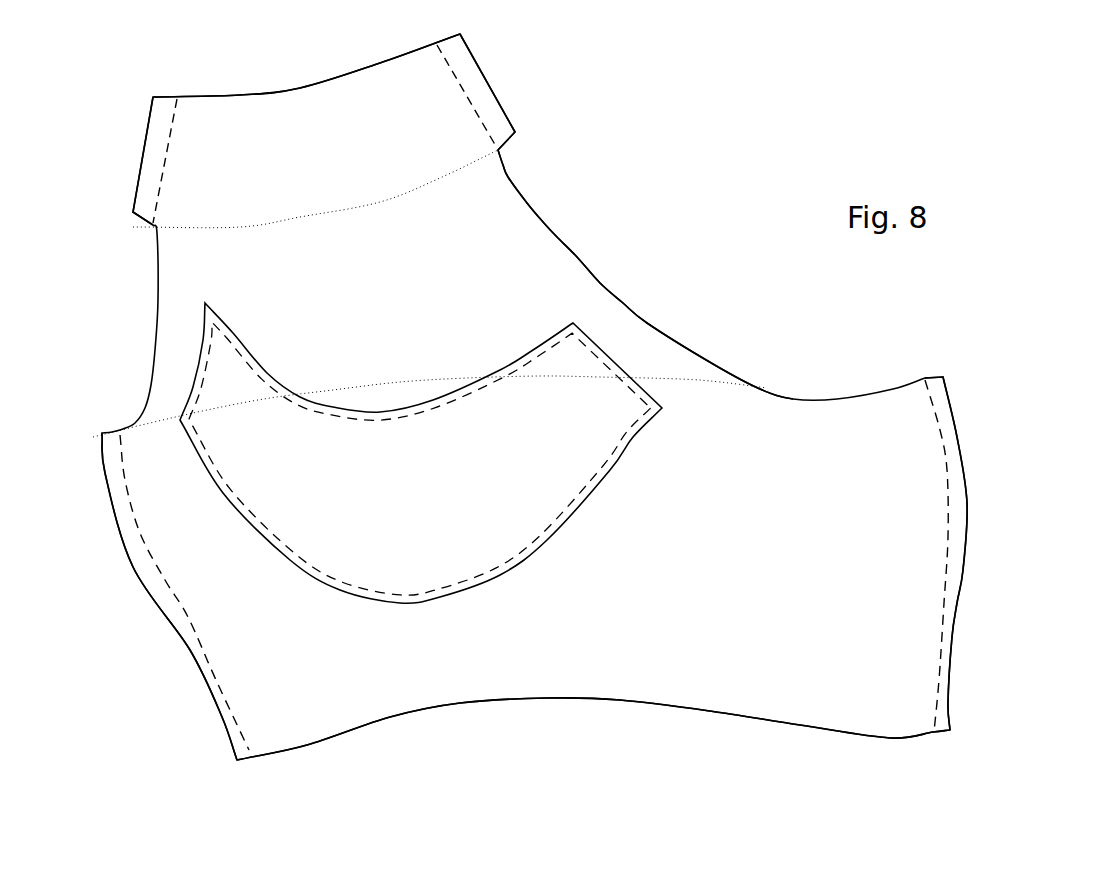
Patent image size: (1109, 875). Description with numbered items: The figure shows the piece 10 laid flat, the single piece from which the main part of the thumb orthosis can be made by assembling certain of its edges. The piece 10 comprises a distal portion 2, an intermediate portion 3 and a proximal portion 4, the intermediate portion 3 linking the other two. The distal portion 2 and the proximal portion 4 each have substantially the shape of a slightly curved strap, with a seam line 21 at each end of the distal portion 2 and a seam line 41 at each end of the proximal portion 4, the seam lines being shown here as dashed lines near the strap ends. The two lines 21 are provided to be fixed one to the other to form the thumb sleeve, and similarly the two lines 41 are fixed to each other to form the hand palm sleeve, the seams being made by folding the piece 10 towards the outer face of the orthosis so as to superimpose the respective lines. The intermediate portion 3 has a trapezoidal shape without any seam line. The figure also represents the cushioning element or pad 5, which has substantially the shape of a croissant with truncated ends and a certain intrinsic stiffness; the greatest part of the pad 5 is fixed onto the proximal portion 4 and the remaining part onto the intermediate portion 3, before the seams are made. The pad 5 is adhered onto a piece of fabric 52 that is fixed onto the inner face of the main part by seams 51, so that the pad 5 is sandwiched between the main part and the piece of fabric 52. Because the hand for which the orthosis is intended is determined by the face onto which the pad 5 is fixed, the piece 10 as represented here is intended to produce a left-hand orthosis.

The piece 10 is at (702, 233).
The distal portion 2 is at (280, 127).
The seam line 21 is at (172, 115).
The intermediate portion 3 is at (522, 266).
The proximal portion 4 is at (587, 655).
The seam line 41 is at (937, 427).
The cushioning element 5 is at (442, 560).
The seams 51 is at (205, 357).
The piece of fabric 52 is at (442, 560).